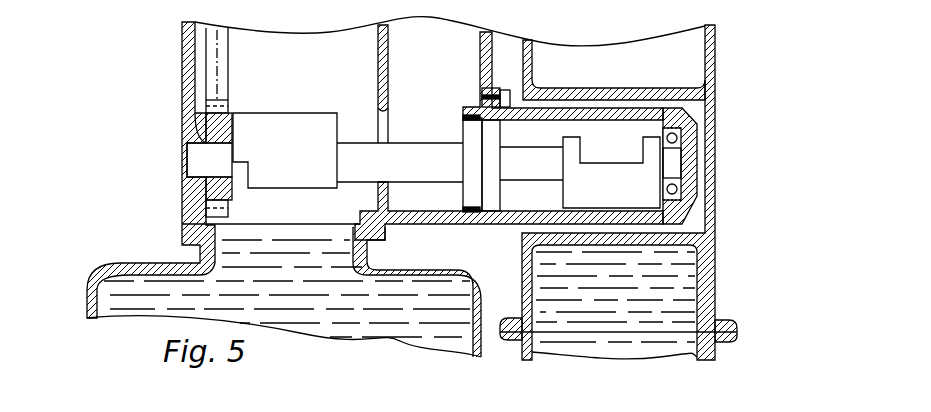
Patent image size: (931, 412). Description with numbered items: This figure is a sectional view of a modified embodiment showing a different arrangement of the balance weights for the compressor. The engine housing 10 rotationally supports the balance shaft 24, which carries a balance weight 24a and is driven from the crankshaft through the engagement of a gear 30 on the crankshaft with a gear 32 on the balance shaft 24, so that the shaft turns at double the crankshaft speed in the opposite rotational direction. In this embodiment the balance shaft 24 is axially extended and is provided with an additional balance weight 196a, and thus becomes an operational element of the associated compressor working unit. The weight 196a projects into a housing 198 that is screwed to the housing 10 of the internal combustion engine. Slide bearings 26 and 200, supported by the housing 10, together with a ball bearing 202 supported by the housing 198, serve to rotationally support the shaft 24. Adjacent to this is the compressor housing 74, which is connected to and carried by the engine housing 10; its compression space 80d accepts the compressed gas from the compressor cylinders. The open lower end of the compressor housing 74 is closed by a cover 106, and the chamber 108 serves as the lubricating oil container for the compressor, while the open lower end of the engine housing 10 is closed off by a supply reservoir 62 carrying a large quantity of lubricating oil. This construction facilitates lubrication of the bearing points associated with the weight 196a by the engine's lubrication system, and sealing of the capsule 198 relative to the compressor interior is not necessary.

The engine housing 10 is at (187, 43).
The gear 30 is at (220, 60).
The slide bearing 26 is at (210, 144).
The gear 32 is at (218, 190).
The balance weight 24a is at (292, 140).
The balance shaft 24 is at (354, 162).
The slide bearing 200 is at (463, 116).
The compression space 80d is at (623, 104).
The compressor housing 74 is at (713, 53).
The additional balance weight 196a is at (631, 140).
The housing 198 is at (682, 118).
The ball bearing 202 is at (683, 195).
The chamber 108 is at (677, 305).
The cover 106 is at (716, 346).
The supply reservoir 62 is at (118, 266).